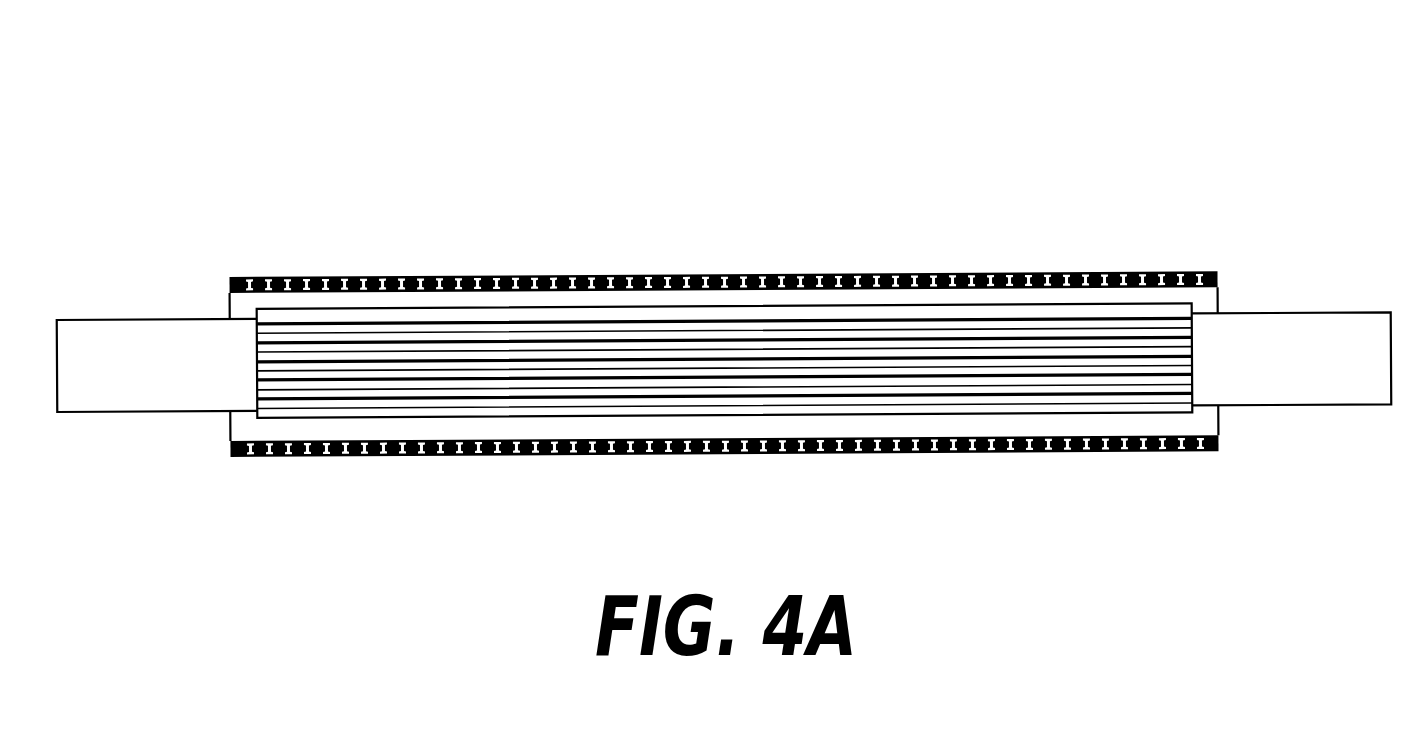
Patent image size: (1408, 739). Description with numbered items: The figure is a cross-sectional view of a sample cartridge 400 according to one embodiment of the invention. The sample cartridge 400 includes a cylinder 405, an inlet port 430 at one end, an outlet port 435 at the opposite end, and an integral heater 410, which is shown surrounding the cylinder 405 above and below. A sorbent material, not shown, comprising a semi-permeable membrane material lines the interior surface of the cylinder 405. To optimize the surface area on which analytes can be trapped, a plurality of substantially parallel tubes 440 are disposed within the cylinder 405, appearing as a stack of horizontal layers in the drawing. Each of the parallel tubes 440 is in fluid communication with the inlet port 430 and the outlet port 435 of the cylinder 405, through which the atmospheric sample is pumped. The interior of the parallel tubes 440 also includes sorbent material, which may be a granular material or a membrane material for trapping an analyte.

The sample cartridge 400 is at (728, 39).
The cylinder 405 is at (249, 212).
The integral heater 410 is at (1100, 452).
The parallel tubes 440 is at (866, 328).
The outlet port 435 is at (125, 413).
The inlet port 430 is at (1320, 385).